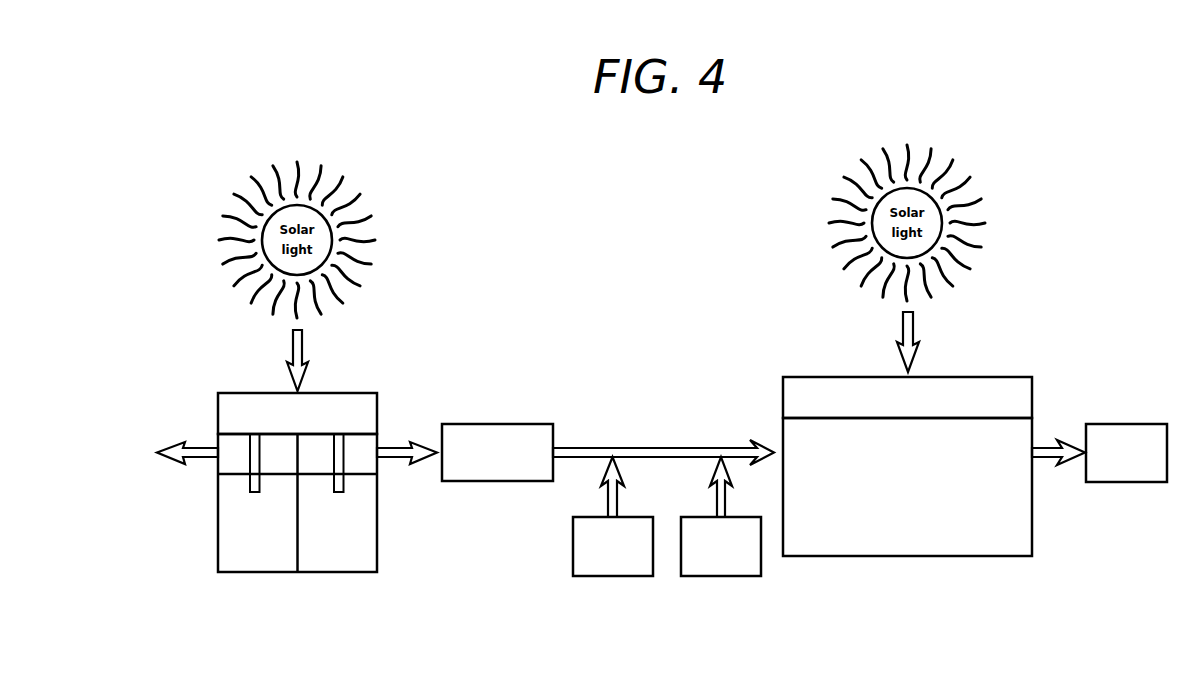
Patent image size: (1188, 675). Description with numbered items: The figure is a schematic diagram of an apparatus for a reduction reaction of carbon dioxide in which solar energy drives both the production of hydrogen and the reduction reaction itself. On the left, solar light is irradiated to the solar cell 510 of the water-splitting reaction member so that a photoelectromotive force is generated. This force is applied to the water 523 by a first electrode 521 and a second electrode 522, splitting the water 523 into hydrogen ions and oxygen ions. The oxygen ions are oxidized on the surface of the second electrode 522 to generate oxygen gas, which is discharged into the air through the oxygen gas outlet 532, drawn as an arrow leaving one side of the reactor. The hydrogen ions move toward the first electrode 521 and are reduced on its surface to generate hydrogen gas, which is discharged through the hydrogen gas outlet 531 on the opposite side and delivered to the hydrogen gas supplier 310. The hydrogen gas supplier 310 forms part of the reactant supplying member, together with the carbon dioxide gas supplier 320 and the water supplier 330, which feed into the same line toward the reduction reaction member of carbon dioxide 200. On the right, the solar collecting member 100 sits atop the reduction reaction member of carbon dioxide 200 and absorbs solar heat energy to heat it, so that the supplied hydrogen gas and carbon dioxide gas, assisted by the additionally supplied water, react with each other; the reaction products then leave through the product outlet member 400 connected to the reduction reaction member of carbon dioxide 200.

The solar collecting member 100 is at (1006, 394).
The reduction reaction member of carbon dioxide 200 is at (1003, 517).
The hydrogen gas supplier 310 is at (512, 423).
The carbon dioxide gas supplier 320 is at (612, 577).
The water supplier 330 is at (720, 577).
The product outlet member 400 is at (1120, 423).
The solar cell 510 is at (348, 401).
The first electrode 521 is at (343, 481).
The second electrode 522 is at (250, 483).
The water 523 is at (245, 545).
The hydrogen gas outlet 531 is at (403, 452).
The oxygen gas outlet 532 is at (181, 444).